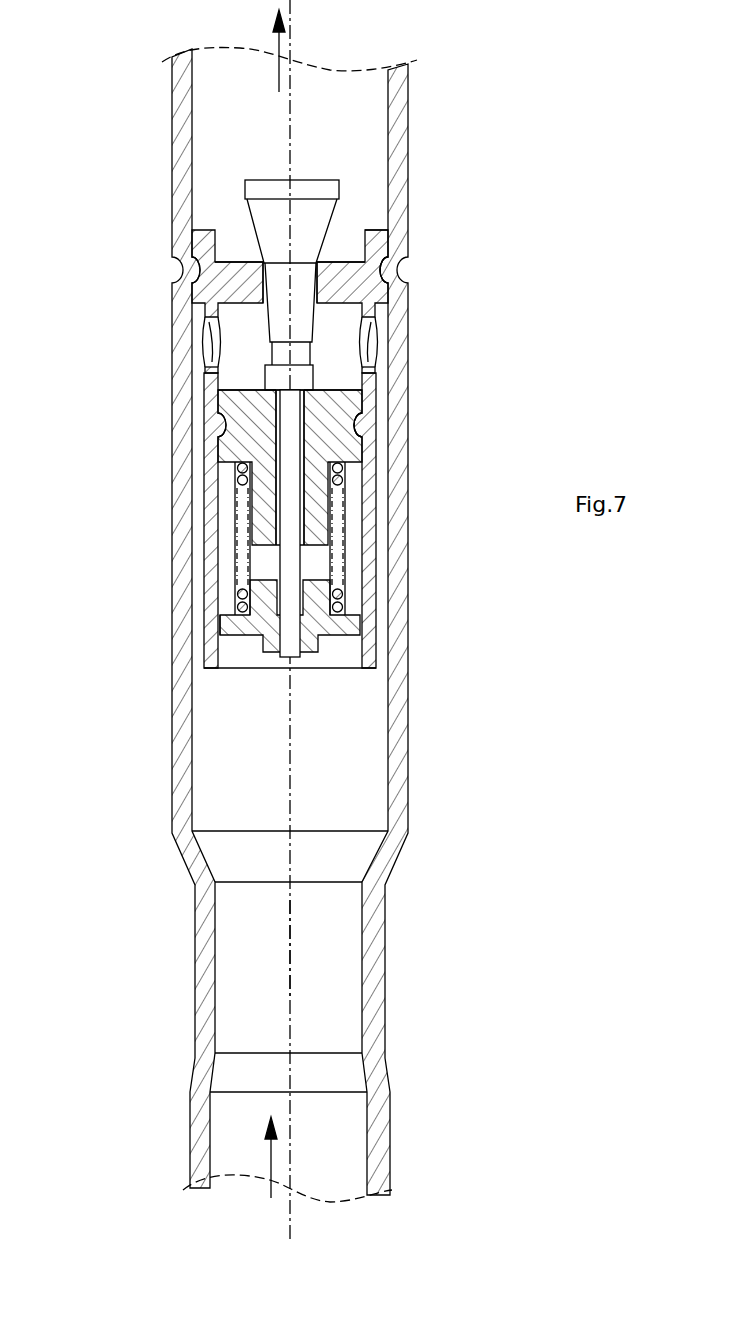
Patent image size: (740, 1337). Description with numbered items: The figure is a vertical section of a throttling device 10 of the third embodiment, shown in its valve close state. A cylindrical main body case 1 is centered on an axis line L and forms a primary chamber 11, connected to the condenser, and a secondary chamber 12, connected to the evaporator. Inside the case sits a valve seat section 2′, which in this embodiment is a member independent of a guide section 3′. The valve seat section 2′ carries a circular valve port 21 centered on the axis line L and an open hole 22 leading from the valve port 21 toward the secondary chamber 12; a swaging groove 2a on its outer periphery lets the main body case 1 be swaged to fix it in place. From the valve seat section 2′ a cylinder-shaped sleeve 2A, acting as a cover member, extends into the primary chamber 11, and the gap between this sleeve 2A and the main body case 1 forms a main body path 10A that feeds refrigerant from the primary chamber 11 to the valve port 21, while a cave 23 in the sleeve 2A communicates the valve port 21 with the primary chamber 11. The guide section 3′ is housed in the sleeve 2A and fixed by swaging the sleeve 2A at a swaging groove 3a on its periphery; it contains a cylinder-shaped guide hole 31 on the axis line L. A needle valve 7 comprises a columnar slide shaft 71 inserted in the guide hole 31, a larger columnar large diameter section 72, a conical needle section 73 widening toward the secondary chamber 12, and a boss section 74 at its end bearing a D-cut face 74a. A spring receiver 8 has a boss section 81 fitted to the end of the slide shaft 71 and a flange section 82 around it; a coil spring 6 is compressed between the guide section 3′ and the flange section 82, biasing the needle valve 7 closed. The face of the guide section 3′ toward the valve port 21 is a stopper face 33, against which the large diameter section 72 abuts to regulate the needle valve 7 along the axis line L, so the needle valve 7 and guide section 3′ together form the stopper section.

The flow control device 10 is at (569, 90).
The axis line L is at (300, 968).
The main body case 1 is at (410, 182).
The secondary chamber 12 is at (212, 120).
The primary chamber 11 is at (212, 752).
The valve seat section 2′ is at (392, 249).
The open hole 22 is at (355, 236).
The swaging groove 2a is at (395, 267).
The valve port 21 is at (300, 296).
The needle section 73 is at (265, 283).
The D-cut face 74a is at (243, 189).
The boss section 74 is at (270, 212).
The needle valve 7 is at (320, 346).
The large diameter section 72 is at (277, 378).
The cave 23 is at (213, 350).
The sleeve 2A is at (368, 560).
The main body path 10A is at (199, 486).
The guide section 3′ is at (366, 450).
The stopper face 33 is at (335, 380).
The swaging groove 3a is at (368, 423).
The guide hole 31 is at (305, 500).
The coil spring 6 is at (344, 485).
The boss section 81 is at (238, 598).
The spring receiver 8 is at (366, 620).
The flange section 82 is at (220, 625).
The slide shaft 71 is at (278, 563).